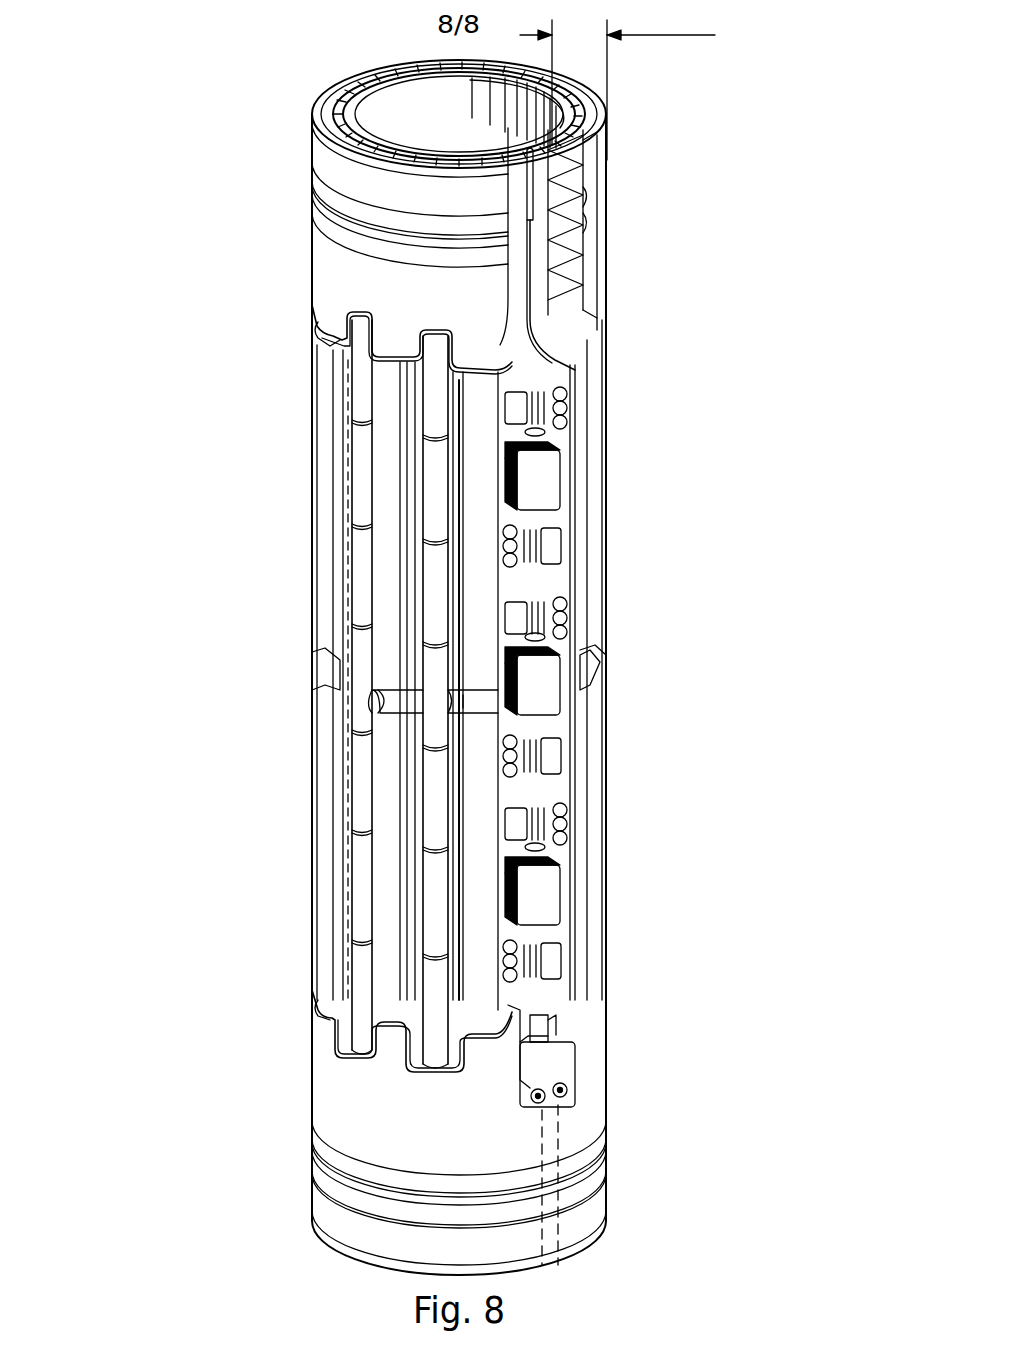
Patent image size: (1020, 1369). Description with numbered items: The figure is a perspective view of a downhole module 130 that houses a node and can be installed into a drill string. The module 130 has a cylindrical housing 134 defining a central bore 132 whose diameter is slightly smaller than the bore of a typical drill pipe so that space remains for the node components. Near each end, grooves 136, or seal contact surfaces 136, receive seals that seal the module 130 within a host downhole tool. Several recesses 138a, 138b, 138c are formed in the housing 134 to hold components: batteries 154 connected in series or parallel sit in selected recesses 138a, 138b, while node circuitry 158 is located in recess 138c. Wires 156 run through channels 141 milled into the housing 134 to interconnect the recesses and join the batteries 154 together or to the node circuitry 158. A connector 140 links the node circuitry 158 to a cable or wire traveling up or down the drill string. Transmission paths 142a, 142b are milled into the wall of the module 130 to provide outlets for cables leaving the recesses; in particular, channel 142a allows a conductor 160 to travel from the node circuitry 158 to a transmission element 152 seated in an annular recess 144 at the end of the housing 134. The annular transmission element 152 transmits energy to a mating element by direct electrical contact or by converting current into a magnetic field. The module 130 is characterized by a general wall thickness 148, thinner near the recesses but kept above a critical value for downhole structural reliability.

The module 130 is at (218, 221).
The central bore 132 is at (425, 110).
The cylindrical housing 134 is at (330, 272).
The grooves 136 is at (605, 213).
The recess 138a is at (340, 885).
The recess 138b is at (413, 950).
The recess 138c is at (583, 777).
The connector 140 is at (560, 1060).
The channels 141 is at (393, 695).
The channel 142a is at (540, 258).
The transmission path 142b is at (560, 1137).
The annular recess 144 is at (322, 117).
The wall thickness 148 is at (645, 90).
The transmission element 152 is at (556, 92).
The batteries 154 is at (357, 487).
The wires 156 is at (325, 330).
The node circuitry 158 is at (552, 677).
The conductor 160 is at (550, 343).